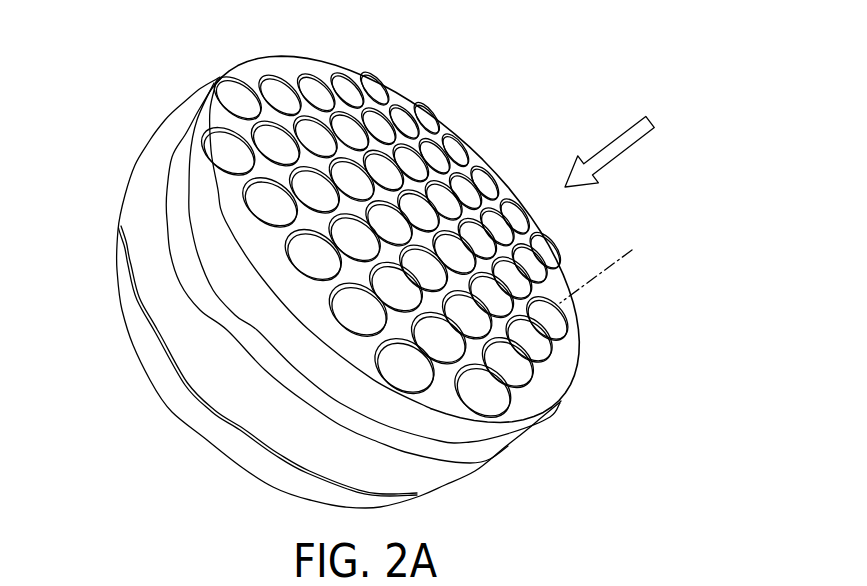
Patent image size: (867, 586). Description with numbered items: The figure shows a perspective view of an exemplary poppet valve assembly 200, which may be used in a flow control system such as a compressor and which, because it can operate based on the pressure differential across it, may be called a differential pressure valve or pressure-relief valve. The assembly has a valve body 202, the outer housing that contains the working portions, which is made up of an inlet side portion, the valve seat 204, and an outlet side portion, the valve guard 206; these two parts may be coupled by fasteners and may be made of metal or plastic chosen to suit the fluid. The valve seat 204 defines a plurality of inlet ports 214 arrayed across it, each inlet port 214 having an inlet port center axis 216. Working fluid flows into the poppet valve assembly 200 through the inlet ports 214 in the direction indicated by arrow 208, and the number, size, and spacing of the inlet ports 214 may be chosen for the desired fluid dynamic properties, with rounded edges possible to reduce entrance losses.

The poppet valve assembly 200 is at (370, 259).
The valve body 202 is at (150, 143).
The valve seat 204 is at (143, 197).
The valve guard 206 is at (127, 287).
The arrow 208 is at (624, 152).
The inlet ports 214 is at (560, 264).
The inlet port center axis 216 is at (628, 262).